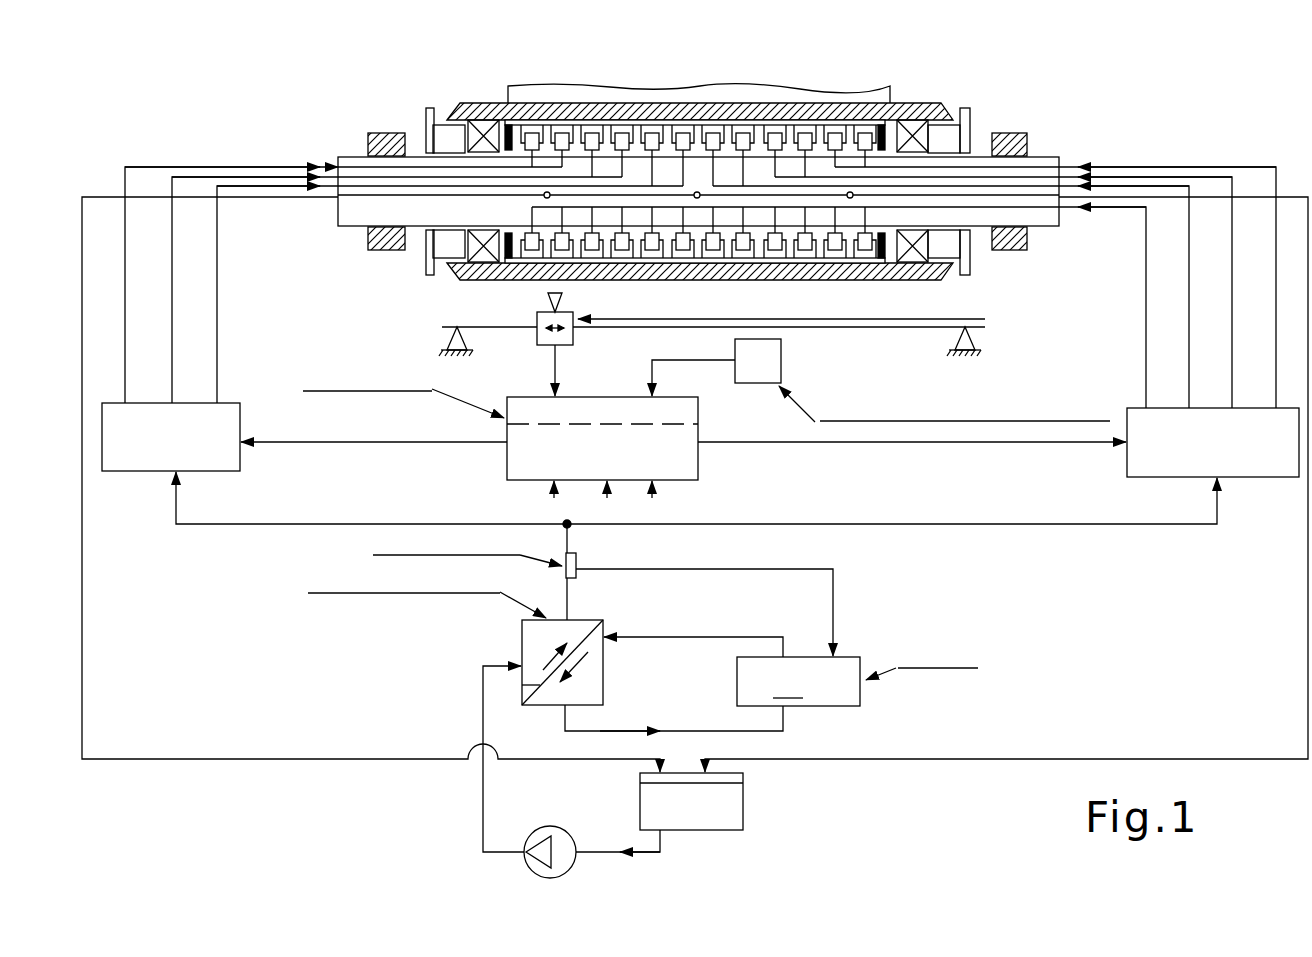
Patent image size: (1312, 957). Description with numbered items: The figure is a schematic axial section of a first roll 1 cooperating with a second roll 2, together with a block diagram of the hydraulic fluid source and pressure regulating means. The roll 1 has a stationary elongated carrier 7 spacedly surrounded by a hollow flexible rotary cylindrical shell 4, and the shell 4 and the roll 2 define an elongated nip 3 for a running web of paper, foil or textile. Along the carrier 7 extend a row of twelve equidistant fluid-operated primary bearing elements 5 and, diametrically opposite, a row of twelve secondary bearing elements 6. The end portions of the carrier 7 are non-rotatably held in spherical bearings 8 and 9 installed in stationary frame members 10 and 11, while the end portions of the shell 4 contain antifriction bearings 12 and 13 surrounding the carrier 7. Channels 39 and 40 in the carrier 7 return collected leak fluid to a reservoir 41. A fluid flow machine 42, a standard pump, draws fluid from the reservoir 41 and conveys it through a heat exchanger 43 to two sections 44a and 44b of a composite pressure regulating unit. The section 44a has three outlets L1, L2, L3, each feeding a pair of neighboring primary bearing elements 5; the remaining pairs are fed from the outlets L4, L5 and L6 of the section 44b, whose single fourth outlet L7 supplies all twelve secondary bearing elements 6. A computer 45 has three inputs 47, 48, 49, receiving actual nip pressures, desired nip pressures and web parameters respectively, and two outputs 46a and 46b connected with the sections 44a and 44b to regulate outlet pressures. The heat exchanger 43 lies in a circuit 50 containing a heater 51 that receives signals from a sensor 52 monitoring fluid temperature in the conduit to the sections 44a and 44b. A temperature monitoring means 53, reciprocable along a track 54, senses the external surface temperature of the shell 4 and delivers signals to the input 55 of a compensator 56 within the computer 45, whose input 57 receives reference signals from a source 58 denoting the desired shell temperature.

The first roll 1 is at (478, 100).
The second roll 2 is at (723, 89).
The nip 3 is at (637, 96).
The shell 4 is at (897, 101).
The primary bearing elements 5 is at (877, 108).
The secondary bearing elements 6 is at (913, 263).
The carrier 7 is at (440, 218).
The spherical bearing 8 is at (368, 142).
The spherical bearing 9 is at (1030, 147).
The stationary frame member 10 is at (381, 250).
The stationary frame member 11 is at (1022, 250).
The antifriction bearing 12 is at (486, 140).
The antifriction bearing 13 is at (968, 125).
The outlet L1 is at (140, 164).
The outlet L2 is at (193, 175).
The outlet L3 is at (243, 185).
The outlet L4 is at (1118, 185).
The outlet L5 is at (1157, 176).
The outlet L6 is at (1233, 166).
The fourth outlet L7 is at (1146, 303).
The channel 39 is at (82, 305).
The channel 40 is at (1308, 304).
The reservoir 41 is at (745, 808).
The fluid flow machine 42 is at (550, 826).
The heat exchanger 43 is at (521, 641).
The section of pressure regulating unit 44a is at (140, 472).
The section of pressure regulating unit 44b is at (1253, 478).
The computer 45 is at (507, 467).
The output 46a is at (428, 442).
The output 46b is at (743, 442).
The input 47 is at (552, 504).
The input 48 is at (607, 504).
The input 49 is at (656, 504).
The circuit 50 is at (686, 637).
The heater 51 is at (777, 637).
The sensor 52 is at (578, 562).
The temperature monitoring means 53 is at (563, 300).
The track 54 is at (861, 330).
The input 55 is at (553, 372).
The compensator 56 is at (585, 412).
The input 57 is at (651, 371).
The source of reference signals 58 is at (781, 360).